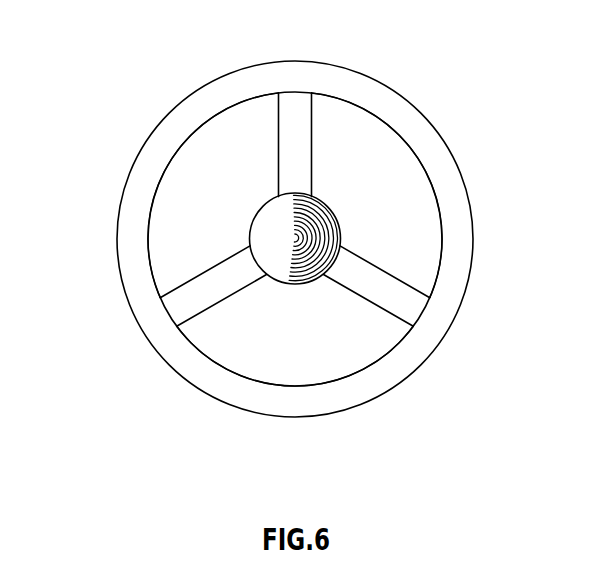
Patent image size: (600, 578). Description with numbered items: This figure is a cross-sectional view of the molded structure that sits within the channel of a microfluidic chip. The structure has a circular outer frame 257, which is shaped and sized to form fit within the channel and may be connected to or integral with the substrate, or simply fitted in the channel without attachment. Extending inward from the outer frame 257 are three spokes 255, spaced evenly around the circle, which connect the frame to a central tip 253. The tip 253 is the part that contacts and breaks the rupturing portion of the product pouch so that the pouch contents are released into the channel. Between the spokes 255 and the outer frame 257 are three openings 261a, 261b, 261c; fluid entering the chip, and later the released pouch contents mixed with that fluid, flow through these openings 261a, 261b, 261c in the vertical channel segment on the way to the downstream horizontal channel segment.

The outer frame 257 is at (299, 61).
The spokes 255 is at (313, 145).
The tip 253 is at (323, 228).
The opening 261a is at (343, 123).
The opening 261b is at (343, 360).
The opening 261c is at (183, 177).